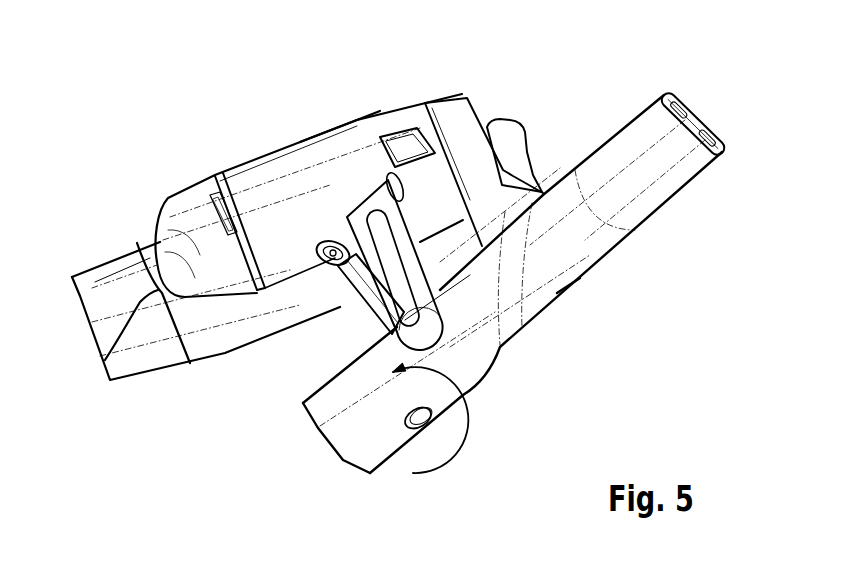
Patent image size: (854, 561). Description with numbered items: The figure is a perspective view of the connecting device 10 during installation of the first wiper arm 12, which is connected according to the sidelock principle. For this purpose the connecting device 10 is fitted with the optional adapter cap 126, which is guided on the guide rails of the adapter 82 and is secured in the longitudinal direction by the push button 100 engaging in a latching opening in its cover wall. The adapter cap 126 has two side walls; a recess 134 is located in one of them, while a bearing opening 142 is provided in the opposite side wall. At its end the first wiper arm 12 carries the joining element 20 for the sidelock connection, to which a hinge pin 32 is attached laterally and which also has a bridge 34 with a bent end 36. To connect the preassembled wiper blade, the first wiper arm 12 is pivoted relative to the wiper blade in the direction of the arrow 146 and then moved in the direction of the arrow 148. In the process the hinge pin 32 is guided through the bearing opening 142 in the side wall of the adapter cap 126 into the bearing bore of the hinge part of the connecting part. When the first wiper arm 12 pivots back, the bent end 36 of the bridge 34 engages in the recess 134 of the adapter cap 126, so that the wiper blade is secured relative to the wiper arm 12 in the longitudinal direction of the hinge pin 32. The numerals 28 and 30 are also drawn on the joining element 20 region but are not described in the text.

The connecting device 10 is at (140, 182).
The first wiper arm 12 is at (716, 150).
The joining element 20 is at (533, 333).
The clamp block bottom face 28 is at (370, 457).
The clamp block 30 is at (328, 428).
The hinge pin 32 is at (330, 250).
The bridge 34 is at (383, 203).
The bent end 36 is at (397, 176).
The adapter 82 is at (200, 207).
The push button 100 is at (397, 142).
The adapter cap 126 is at (335, 136).
The recess 134 is at (338, 150).
The bearing opening 142 is at (330, 262).
The arrow 146 is at (467, 422).
The arrow 148 is at (331, 331).